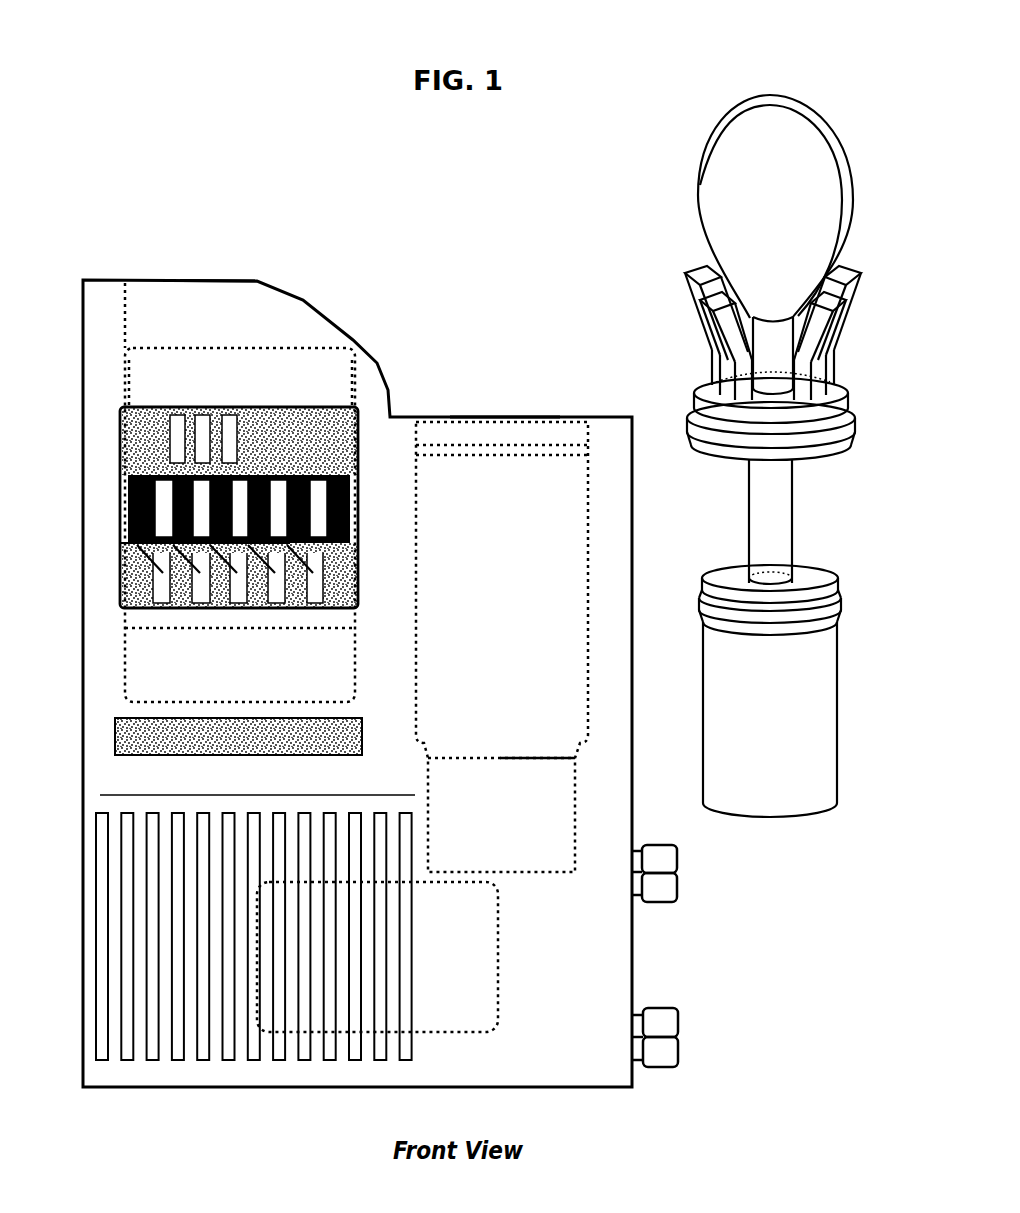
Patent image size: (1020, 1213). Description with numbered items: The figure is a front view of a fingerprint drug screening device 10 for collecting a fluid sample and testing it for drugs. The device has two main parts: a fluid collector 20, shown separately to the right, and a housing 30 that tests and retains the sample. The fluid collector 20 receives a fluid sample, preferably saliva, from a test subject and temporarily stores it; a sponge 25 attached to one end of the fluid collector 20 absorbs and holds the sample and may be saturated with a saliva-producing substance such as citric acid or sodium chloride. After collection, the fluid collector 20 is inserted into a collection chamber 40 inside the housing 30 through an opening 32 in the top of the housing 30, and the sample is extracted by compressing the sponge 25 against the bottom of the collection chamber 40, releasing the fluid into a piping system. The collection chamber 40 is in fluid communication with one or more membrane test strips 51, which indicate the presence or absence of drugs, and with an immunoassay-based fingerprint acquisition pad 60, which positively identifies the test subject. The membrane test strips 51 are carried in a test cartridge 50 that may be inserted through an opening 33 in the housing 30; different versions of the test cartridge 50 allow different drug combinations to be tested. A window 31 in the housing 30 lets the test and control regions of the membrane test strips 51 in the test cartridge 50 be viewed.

The fingerprint drug screening device 10 is at (416, 204).
The fluid collector 20 is at (683, 172).
The sponge 25 is at (784, 715).
The housing 30 is at (380, 683).
The window 31 is at (294, 507).
The opening 32 is at (529, 396).
The opening 33 is at (270, 261).
The collection chamber 40 is at (556, 647).
The test cartridge 50 is at (240, 502).
The membrane test strips 51 is at (120, 543).
The immunoassay-based fingerprint acquisition pad 60 is at (431, 974).